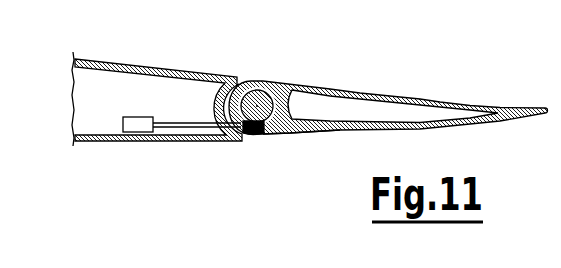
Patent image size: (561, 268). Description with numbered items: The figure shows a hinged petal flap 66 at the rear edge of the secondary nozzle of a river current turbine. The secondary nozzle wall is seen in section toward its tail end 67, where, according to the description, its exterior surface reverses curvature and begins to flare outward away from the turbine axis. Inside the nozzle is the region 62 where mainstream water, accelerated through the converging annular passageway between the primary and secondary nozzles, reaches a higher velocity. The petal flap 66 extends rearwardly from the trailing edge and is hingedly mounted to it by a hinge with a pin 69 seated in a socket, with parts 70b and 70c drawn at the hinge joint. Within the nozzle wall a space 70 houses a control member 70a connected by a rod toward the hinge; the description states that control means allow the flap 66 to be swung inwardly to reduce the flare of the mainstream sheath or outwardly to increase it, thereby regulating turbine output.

The region of accelerated mainstream water 62 is at (136, 63).
The petal flap 66 is at (368, 95).
The tail end 67 is at (77, 146).
The hinge pin 69 is at (255, 80).
The internal cavity 70 is at (193, 101).
The actuator block 70a is at (136, 128).
The seal member 70b is at (247, 135).
The hinge socket wall 70c is at (276, 130).